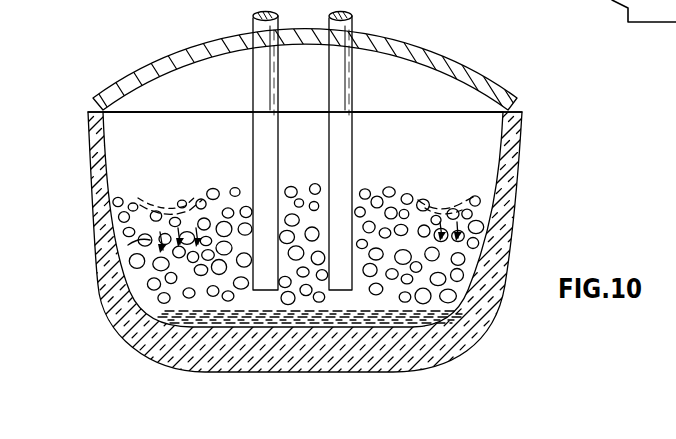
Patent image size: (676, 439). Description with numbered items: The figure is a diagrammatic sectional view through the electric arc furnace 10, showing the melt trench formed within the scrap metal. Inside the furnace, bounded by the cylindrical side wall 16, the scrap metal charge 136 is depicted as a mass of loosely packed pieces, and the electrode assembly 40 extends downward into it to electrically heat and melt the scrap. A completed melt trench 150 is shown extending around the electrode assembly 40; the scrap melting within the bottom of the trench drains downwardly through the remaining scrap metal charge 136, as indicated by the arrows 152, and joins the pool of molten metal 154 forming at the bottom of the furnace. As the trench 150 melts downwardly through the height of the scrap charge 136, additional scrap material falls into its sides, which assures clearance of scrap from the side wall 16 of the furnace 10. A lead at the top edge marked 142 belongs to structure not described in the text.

The electric arc furnace 10 is at (338, 217).
The side wall 16 is at (112, 238).
The electrode assembly 40 is at (372, 128).
The scrap metal charge 136 is at (452, 210).
The gas supply conduit 142 is at (597, 0).
The melt trench 150 is at (170, 210).
The arrows 152 is at (140, 248).
The pool of molten metal 154 is at (350, 312).